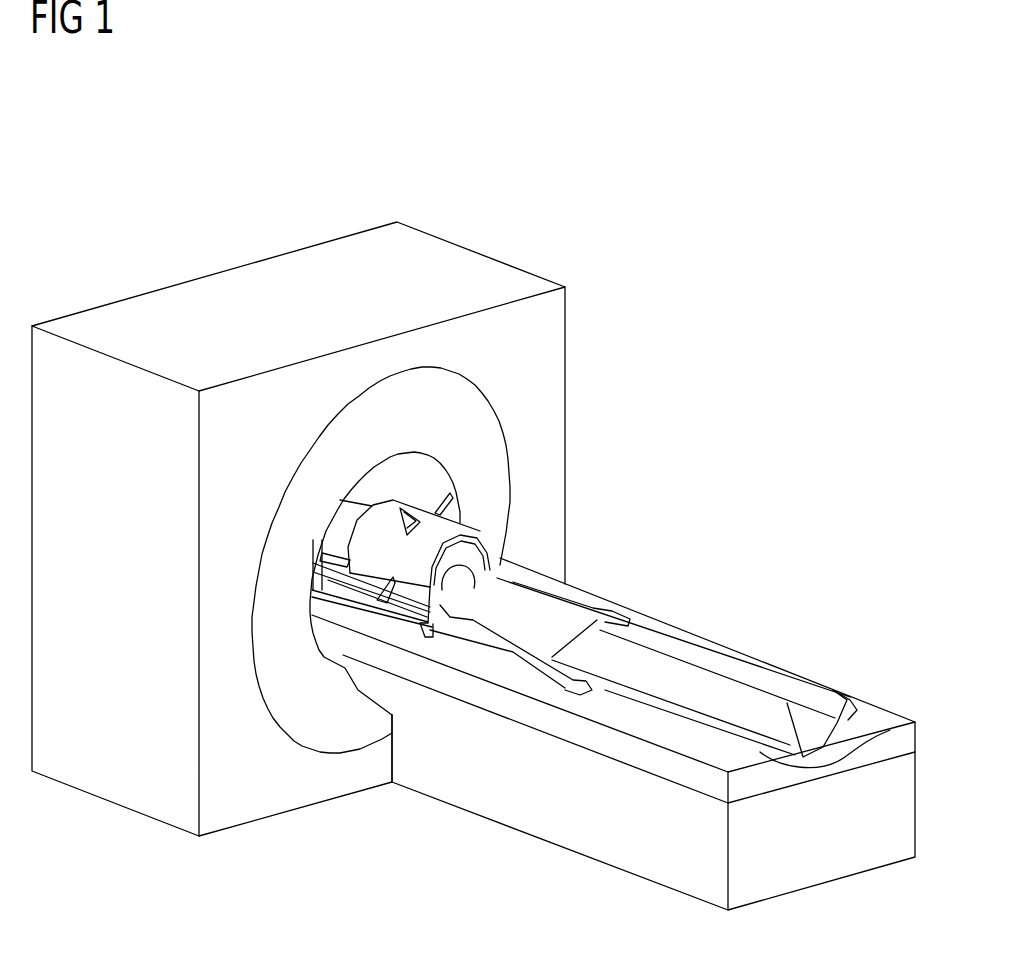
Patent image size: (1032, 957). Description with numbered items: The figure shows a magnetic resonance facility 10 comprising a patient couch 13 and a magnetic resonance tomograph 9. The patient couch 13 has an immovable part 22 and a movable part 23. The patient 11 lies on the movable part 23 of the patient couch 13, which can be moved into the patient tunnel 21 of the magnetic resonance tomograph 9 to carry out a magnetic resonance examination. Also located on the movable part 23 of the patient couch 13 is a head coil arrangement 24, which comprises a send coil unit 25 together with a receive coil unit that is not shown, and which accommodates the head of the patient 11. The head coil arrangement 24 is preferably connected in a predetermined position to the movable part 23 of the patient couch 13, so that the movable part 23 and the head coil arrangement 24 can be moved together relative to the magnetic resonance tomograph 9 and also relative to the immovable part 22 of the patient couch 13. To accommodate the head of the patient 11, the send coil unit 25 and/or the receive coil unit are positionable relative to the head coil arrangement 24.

The magnetic resonance facility 10 is at (640, 100).
The magnetic resonance tomograph 9 is at (250, 283).
The patient tunnel 21 is at (482, 448).
The send coil unit 25 is at (487, 540).
The head coil arrangement 24 is at (538, 552).
The patient 11 is at (677, 655).
The patient couch 13 is at (486, 849).
The immovable part of the patient couch 22 is at (877, 855).
The movable part of the patient couch 23 is at (877, 718).